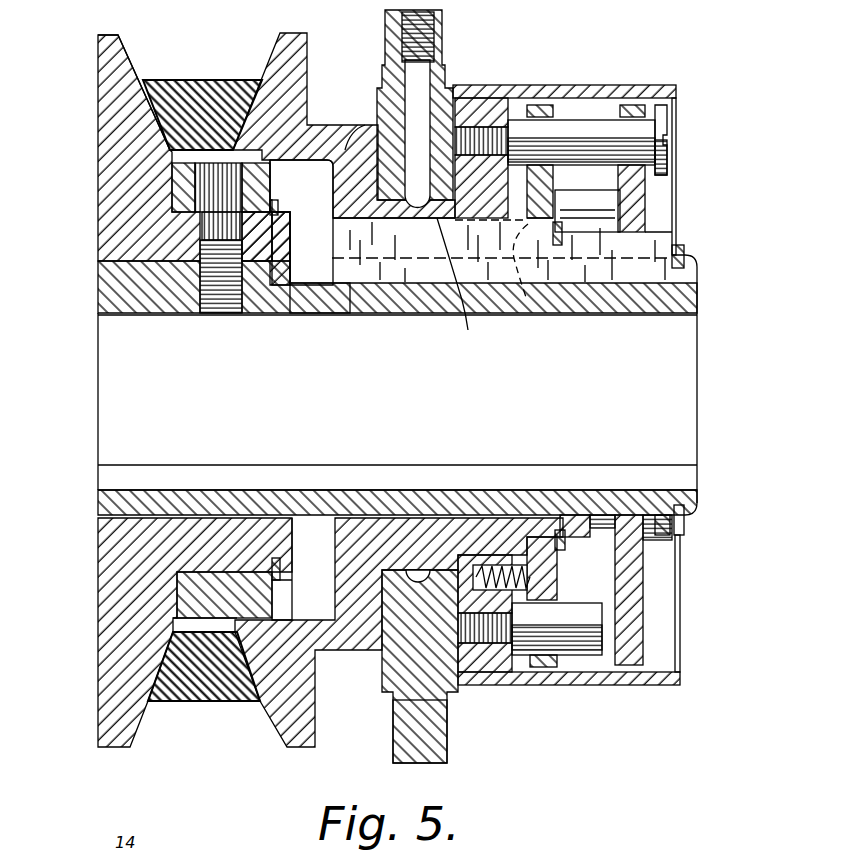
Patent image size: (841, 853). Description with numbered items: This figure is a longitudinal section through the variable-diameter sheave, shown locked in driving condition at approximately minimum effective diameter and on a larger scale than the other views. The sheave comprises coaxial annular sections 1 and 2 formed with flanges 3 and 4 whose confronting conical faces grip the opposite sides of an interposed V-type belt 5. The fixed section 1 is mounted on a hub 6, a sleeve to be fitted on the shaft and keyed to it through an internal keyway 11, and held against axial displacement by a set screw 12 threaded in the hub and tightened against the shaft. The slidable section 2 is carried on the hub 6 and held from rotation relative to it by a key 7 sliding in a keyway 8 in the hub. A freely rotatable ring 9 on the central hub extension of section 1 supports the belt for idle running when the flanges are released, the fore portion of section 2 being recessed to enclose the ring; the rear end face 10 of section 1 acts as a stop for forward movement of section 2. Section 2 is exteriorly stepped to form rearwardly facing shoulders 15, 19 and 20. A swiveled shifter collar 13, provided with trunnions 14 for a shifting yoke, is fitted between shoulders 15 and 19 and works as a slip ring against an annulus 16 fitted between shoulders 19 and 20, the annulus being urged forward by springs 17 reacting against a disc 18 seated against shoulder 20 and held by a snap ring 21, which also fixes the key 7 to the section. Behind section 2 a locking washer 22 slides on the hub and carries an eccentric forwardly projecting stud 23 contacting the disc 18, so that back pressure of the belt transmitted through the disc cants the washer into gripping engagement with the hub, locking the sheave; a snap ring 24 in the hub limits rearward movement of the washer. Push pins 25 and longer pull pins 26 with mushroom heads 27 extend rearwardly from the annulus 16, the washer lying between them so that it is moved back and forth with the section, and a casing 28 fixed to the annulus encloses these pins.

The annular section 1 is at (125, 210).
The annular section 2 is at (357, 184).
The flange 3 is at (110, 52).
The flange 4 is at (293, 56).
The belt 5 is at (194, 92).
The hub 6 is at (386, 300).
The key 7 is at (421, 272).
The keyway 8 is at (313, 275).
The freely rotatable ring 9 is at (182, 182).
The rear end face 10 is at (278, 262).
The internal keyway 11 is at (456, 478).
The set screw 12 is at (215, 312).
The shifter collar 13 is at (440, 100).
The trunnions 14 is at (490, 31).
The shoulder 15 is at (360, 150).
The annulus 16 is at (482, 108).
The springs 17 is at (535, 580).
The disc 18 is at (540, 108).
The shoulder 19 is at (463, 287).
The shoulder 20 is at (527, 300).
The snap ring 21 is at (562, 245).
The locking washer 22 is at (640, 200).
The stud 23 is at (602, 216).
The snap ring 24 is at (685, 256).
The push pins 25 is at (588, 660).
The pull pins 26 is at (590, 120).
The mushroom heads 27 is at (668, 160).
The casing 28 is at (676, 92).